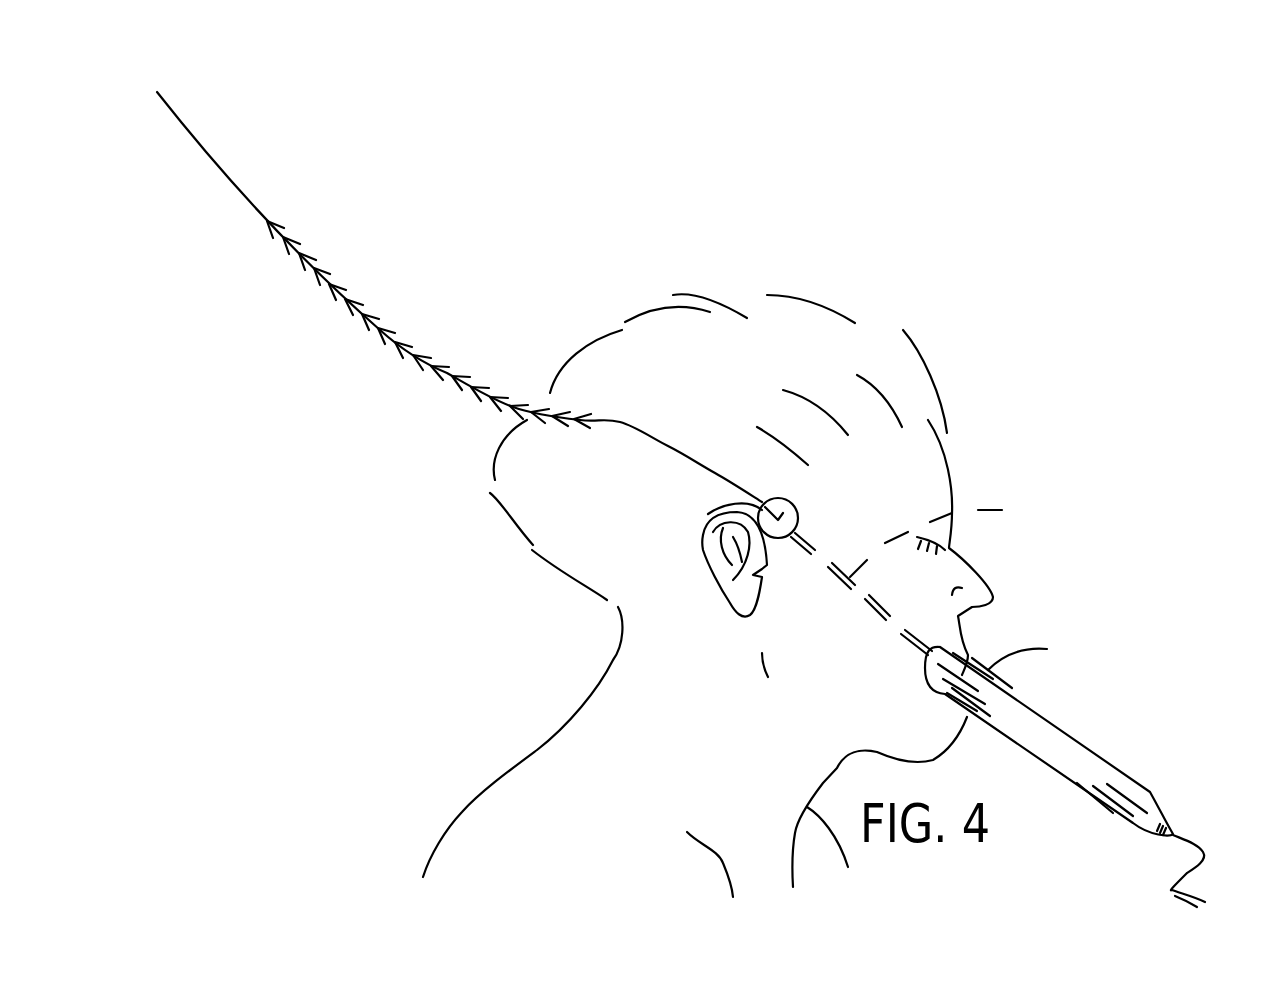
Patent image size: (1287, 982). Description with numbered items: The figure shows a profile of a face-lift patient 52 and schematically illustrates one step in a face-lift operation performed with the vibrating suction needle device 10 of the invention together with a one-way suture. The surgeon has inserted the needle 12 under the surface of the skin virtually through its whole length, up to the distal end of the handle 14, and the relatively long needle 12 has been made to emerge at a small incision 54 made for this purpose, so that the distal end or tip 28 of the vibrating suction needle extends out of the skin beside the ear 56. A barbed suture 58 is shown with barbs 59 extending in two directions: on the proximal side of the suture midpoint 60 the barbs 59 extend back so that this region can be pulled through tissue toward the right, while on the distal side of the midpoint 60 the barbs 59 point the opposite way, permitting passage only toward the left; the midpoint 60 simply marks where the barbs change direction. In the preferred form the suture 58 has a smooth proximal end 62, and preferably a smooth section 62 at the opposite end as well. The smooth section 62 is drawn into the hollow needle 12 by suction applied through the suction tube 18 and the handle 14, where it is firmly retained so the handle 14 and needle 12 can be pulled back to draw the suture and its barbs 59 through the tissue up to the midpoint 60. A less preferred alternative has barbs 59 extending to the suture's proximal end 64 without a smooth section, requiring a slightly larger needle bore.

The vibrating suction needle device 10 is at (1117, 754).
The needle 12 is at (1021, 514).
The handle 14 is at (1032, 651).
The suction tube 18 is at (1207, 858).
The distal end or tip 28 is at (770, 503).
The face-lift patient 52 is at (955, 408).
The small incision 54 is at (795, 510).
The ear 56 is at (708, 567).
The barbed suture 58 is at (502, 392).
The barbs 59 is at (334, 279).
The suture midpoint 60 is at (414, 352).
The smooth proximal end / smooth section 62 is at (207, 150).
The proximal end 64 is at (708, 514).